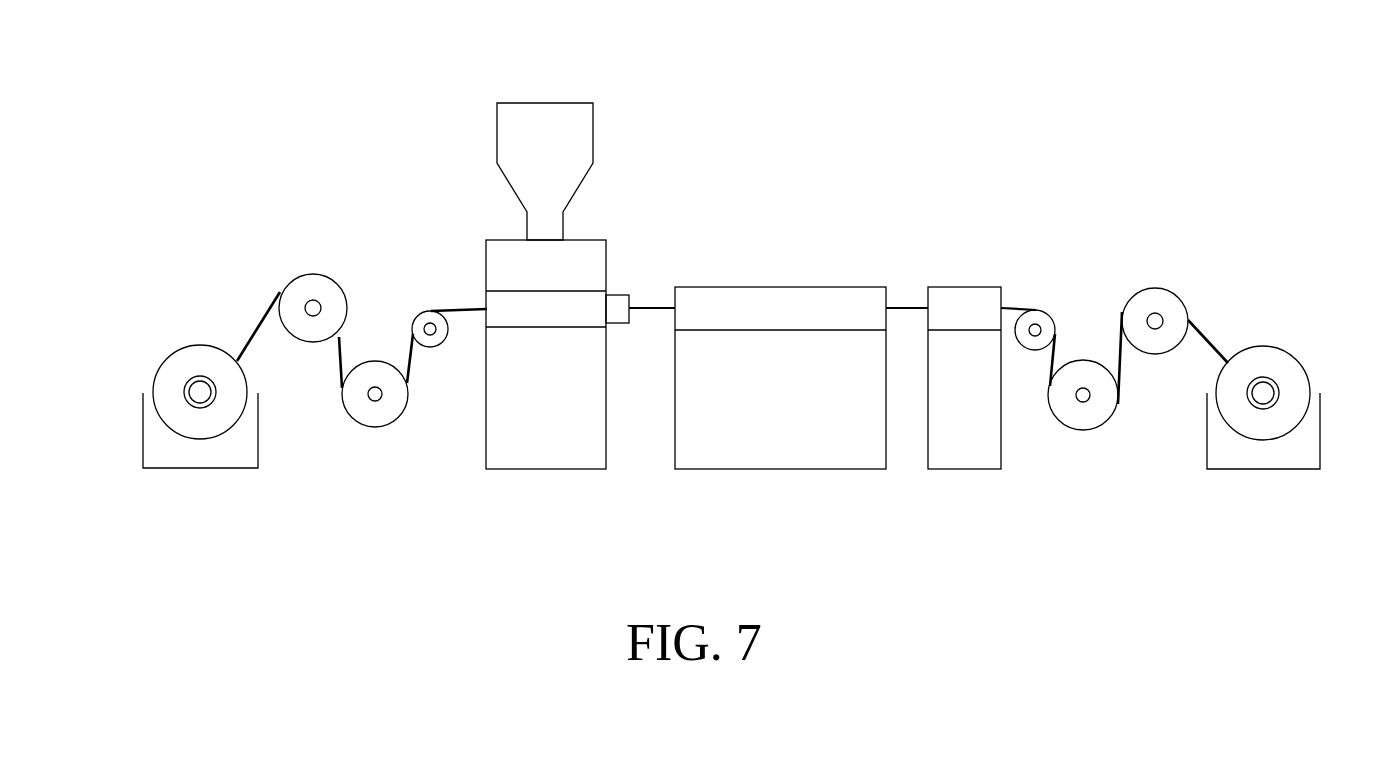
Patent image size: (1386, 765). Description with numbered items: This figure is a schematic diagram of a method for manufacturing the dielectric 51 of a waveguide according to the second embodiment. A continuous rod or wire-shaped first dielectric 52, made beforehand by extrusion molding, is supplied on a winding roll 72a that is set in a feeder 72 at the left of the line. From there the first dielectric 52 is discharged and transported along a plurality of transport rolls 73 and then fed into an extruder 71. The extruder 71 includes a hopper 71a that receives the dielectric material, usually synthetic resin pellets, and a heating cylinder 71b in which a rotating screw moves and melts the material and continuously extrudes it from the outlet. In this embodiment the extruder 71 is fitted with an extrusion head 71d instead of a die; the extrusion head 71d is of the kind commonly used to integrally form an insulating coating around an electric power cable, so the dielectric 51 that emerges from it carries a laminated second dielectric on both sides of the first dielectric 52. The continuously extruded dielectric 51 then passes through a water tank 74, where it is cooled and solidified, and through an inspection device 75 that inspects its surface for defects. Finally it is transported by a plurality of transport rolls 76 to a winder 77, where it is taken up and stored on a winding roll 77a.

The dielectric 51 is at (650, 310).
The first dielectric 52 is at (263, 307).
The extruder 71 is at (538, 470).
The hopper 71a is at (560, 104).
The heating cylinder 71b is at (510, 327).
The extrusion head 71d is at (623, 291).
The feeder 72 is at (262, 450).
The winding roll 72a is at (163, 361).
The transport rolls 73 is at (372, 359).
The water tank 74 is at (785, 470).
The inspection device 75 is at (965, 470).
The transport rolls 76 is at (1088, 364).
The winder 77 is at (1322, 430).
The winding roll 77a is at (1297, 360).